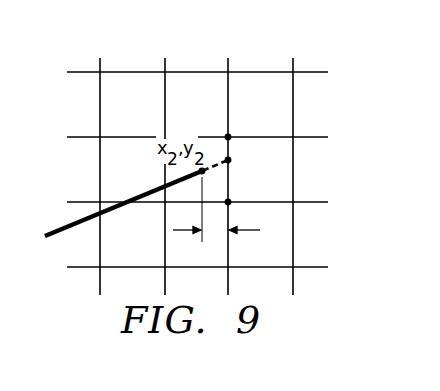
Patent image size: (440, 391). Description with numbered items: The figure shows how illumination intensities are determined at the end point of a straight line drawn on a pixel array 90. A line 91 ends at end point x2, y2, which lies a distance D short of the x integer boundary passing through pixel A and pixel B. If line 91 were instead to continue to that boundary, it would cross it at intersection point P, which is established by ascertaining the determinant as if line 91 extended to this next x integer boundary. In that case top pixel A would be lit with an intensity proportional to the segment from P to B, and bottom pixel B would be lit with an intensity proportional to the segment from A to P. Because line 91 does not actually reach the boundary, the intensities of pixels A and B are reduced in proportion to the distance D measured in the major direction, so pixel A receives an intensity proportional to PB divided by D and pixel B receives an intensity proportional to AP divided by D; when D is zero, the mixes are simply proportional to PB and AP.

The pixel array 90 is at (315, 54).
The line 91 is at (64, 226).
The pixel A is at (236, 127).
The intersection point P is at (235, 162).
The pixel B is at (235, 192).
The distance D is at (216, 209).